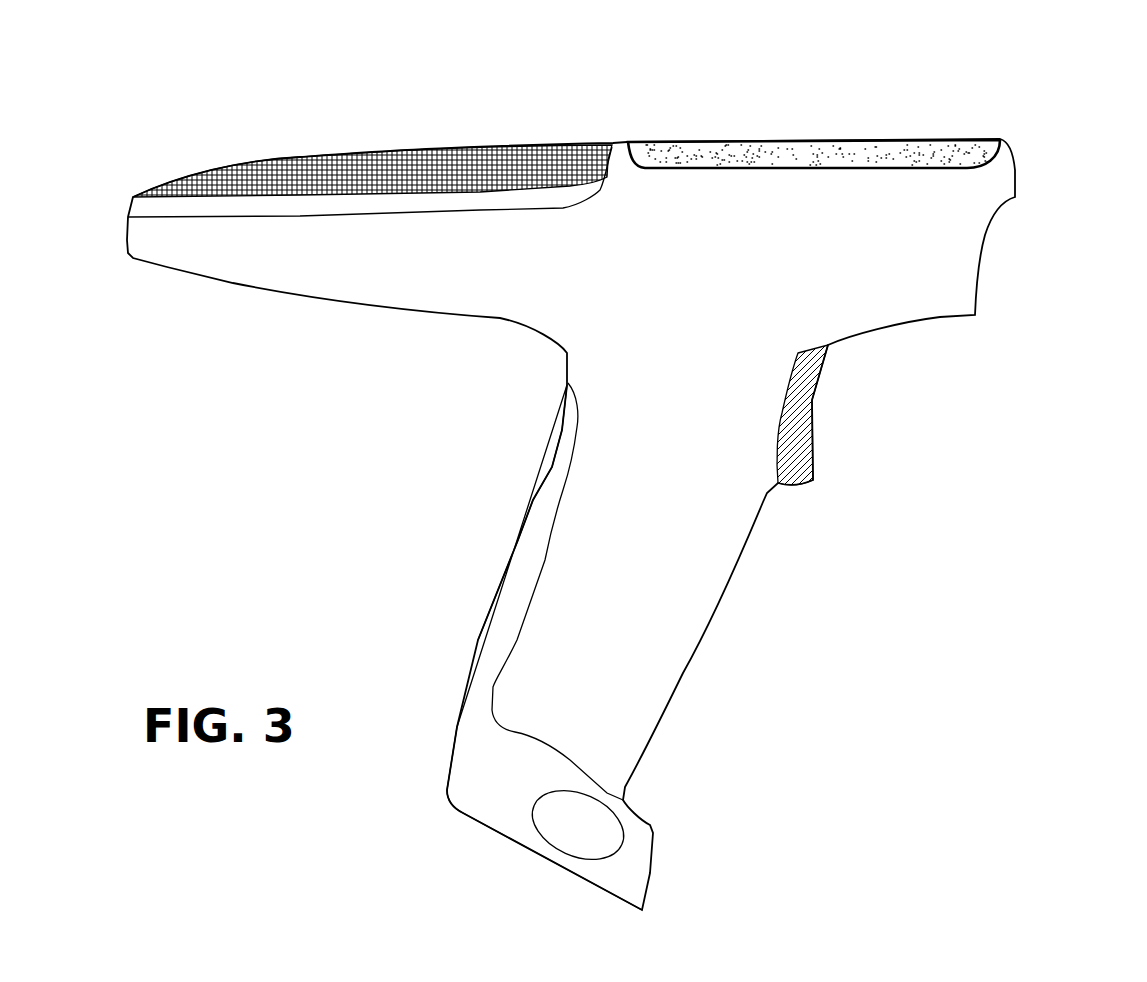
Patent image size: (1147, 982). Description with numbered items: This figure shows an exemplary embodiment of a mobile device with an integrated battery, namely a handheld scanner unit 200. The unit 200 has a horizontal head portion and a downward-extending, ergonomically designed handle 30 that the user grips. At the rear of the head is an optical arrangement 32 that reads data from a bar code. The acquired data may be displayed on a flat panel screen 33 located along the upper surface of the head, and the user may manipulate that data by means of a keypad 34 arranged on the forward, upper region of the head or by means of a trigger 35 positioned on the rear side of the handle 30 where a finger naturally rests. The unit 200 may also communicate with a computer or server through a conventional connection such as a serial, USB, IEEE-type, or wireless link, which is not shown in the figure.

The handheld scanner unit 200 is at (530, 112).
The handle 30 is at (503, 532).
The optical arrangement 32 is at (997, 245).
The flat panel screen 33 is at (833, 130).
The keypad 34 is at (300, 142).
The trigger 35 is at (820, 405).